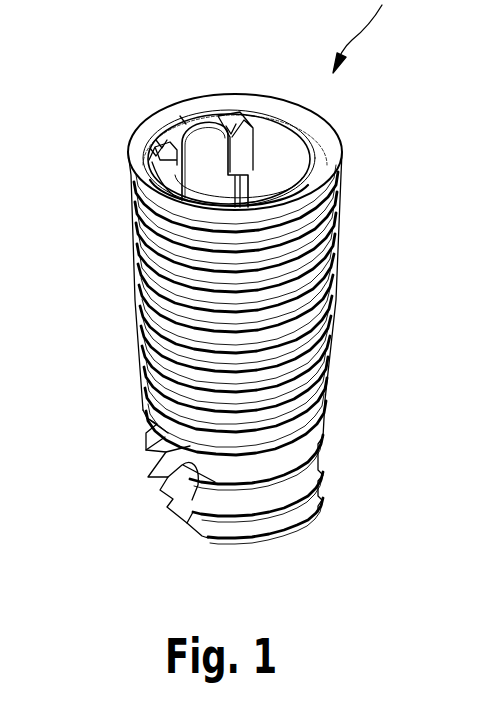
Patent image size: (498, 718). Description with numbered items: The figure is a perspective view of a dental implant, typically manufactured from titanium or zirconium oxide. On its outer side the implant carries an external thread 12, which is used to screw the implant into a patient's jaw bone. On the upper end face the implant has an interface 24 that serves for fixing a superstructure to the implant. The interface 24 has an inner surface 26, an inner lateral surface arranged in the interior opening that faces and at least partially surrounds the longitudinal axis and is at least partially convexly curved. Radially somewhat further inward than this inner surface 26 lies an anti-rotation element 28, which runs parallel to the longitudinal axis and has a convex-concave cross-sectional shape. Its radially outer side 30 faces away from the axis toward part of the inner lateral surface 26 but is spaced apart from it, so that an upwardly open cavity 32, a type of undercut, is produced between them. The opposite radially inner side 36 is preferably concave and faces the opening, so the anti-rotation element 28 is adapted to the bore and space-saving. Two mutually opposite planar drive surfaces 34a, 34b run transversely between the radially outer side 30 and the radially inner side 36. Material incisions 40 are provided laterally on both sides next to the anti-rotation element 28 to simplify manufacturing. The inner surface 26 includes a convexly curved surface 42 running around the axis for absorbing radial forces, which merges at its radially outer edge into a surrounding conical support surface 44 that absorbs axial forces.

The external thread 12 is at (317, 352).
The interface 24 is at (212, 204).
The inner surface 26 is at (307, 147).
The anti-rotation element 28 is at (197, 127).
The radially outer side 30 is at (160, 146).
The cavity 32 is at (183, 118).
The drive surface 34a is at (150, 165).
The drive surface 34b is at (250, 119).
The radially inner side 36 is at (181, 170).
The material incisions 40 is at (230, 132).
The convexly curved surface 42 is at (315, 163).
The support surface 44 is at (323, 173).